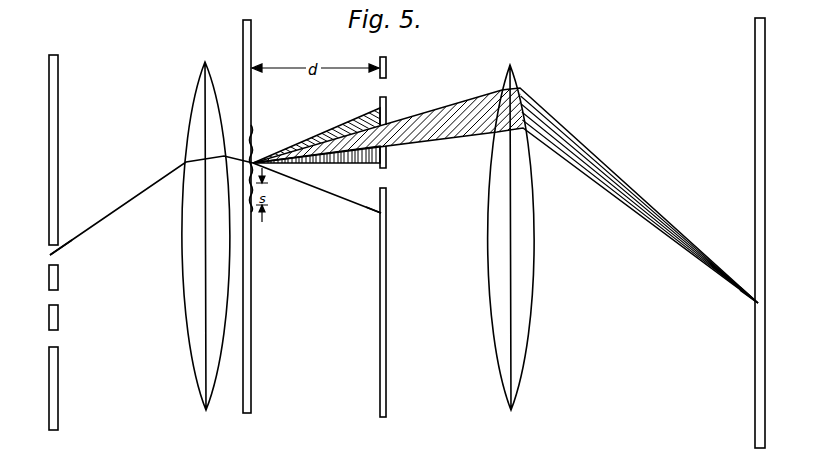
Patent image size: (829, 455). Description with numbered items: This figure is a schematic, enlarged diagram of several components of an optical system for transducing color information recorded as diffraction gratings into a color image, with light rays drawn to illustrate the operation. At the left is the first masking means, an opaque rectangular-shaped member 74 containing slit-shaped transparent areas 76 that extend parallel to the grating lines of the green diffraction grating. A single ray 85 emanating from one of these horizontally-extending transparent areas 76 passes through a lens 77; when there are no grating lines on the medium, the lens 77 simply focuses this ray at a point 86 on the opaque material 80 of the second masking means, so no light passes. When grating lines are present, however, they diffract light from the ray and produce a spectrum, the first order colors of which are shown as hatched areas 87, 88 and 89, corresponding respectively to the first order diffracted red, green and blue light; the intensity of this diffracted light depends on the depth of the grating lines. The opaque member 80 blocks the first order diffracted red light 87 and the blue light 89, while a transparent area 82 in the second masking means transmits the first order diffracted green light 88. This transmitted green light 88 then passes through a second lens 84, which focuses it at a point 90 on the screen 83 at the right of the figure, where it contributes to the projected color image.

The opaque rectangular-shaped member 74 is at (49, 210).
The transparent areas 76 is at (50, 258).
The lens 77 is at (192, 133).
The opaque material 80 is at (388, 262).
The transparent area 82 is at (383, 87).
The screen 83 is at (756, 153).
The lens 84 is at (490, 212).
The ray 85 is at (116, 207).
The point 86 is at (379, 214).
The first order diffracted red light 87 is at (353, 126).
The first order diffracted green light 88 is at (447, 113).
The first order diffracted blue light 89 is at (372, 167).
The point 90 is at (756, 304).